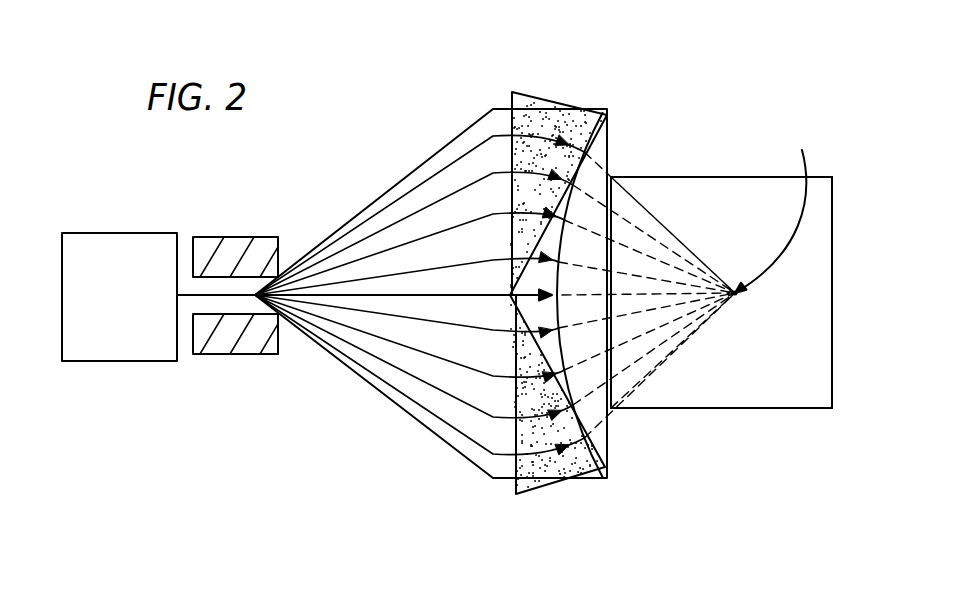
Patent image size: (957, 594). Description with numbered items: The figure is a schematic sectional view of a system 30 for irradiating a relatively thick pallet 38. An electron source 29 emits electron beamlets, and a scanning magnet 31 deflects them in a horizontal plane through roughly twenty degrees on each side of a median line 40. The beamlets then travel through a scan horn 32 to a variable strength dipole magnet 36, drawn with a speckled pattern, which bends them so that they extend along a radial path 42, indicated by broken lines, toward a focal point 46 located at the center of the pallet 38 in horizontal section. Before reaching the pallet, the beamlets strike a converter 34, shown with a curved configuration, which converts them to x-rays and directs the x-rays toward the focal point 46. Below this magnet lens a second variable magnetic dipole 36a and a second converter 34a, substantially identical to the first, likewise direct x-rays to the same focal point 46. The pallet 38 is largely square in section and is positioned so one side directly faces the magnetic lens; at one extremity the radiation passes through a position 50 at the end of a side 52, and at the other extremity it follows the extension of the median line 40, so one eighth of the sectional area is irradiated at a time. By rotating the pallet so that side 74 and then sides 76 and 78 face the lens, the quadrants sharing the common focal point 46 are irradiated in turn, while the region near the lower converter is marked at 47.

The electron source 29 is at (120, 232).
The scanning magnet 31 is at (240, 237).
The system 30 is at (381, 447).
The scan horn 32 is at (387, 400).
The median line 40 is at (408, 297).
The variable strength dipole magnet 36 is at (543, 112).
The variable magnetic dipole 36a is at (583, 465).
The converter 34 is at (602, 147).
The converter 34a is at (600, 442).
The pallet 38 is at (822, 408).
The position 50 is at (612, 176).
The side 52 is at (598, 309).
The radial path 42 is at (630, 293).
The focal point 46 is at (776, 211).
The lower edge of detector aperture 47 is at (563, 400).
The side 74 is at (748, 177).
The side 76 is at (832, 238).
The side 78 is at (714, 408).